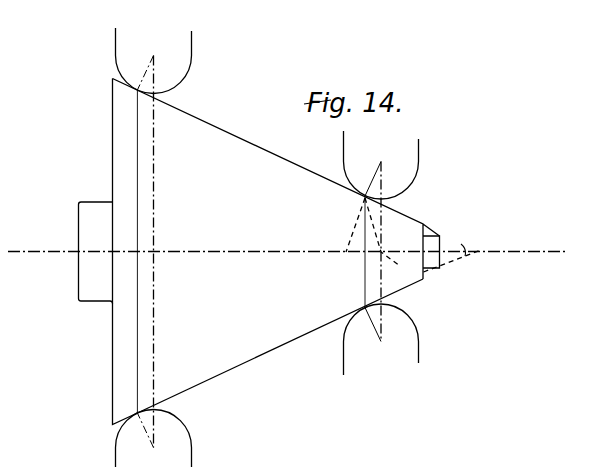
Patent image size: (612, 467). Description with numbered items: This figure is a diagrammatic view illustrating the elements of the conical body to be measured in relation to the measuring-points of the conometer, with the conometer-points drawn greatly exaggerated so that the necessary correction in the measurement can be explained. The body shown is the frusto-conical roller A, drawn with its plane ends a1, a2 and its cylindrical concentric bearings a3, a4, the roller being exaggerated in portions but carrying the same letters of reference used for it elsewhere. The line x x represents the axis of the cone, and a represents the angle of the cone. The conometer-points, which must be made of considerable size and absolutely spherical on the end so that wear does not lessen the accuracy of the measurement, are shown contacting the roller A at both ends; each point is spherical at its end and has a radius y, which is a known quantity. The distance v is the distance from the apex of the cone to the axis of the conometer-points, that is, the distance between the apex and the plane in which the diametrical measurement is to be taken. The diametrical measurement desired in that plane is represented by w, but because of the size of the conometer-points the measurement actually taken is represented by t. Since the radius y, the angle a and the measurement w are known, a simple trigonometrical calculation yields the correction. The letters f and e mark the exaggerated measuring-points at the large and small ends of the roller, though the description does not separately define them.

The frusto-conical roller A is at (234, 152).
The angle of the cone a is at (463, 239).
The plane end a1 is at (104, 347).
The plane end a2 is at (415, 272).
The cylindrical concentric bearing a3 is at (76, 219).
The cylindrical concentric bearing a4 is at (428, 239).
The rollers at large end f is at (168, 49).
The rollers at small end e is at (397, 145).
The axis of the cone x is at (295, 255).
The radius of the conometer-point y is at (372, 179).
The diametrical measurement desired w is at (373, 252).
The measurement actually taken t is at (336, 226).
The distance from apex to axis of conometer-points v is at (407, 260).